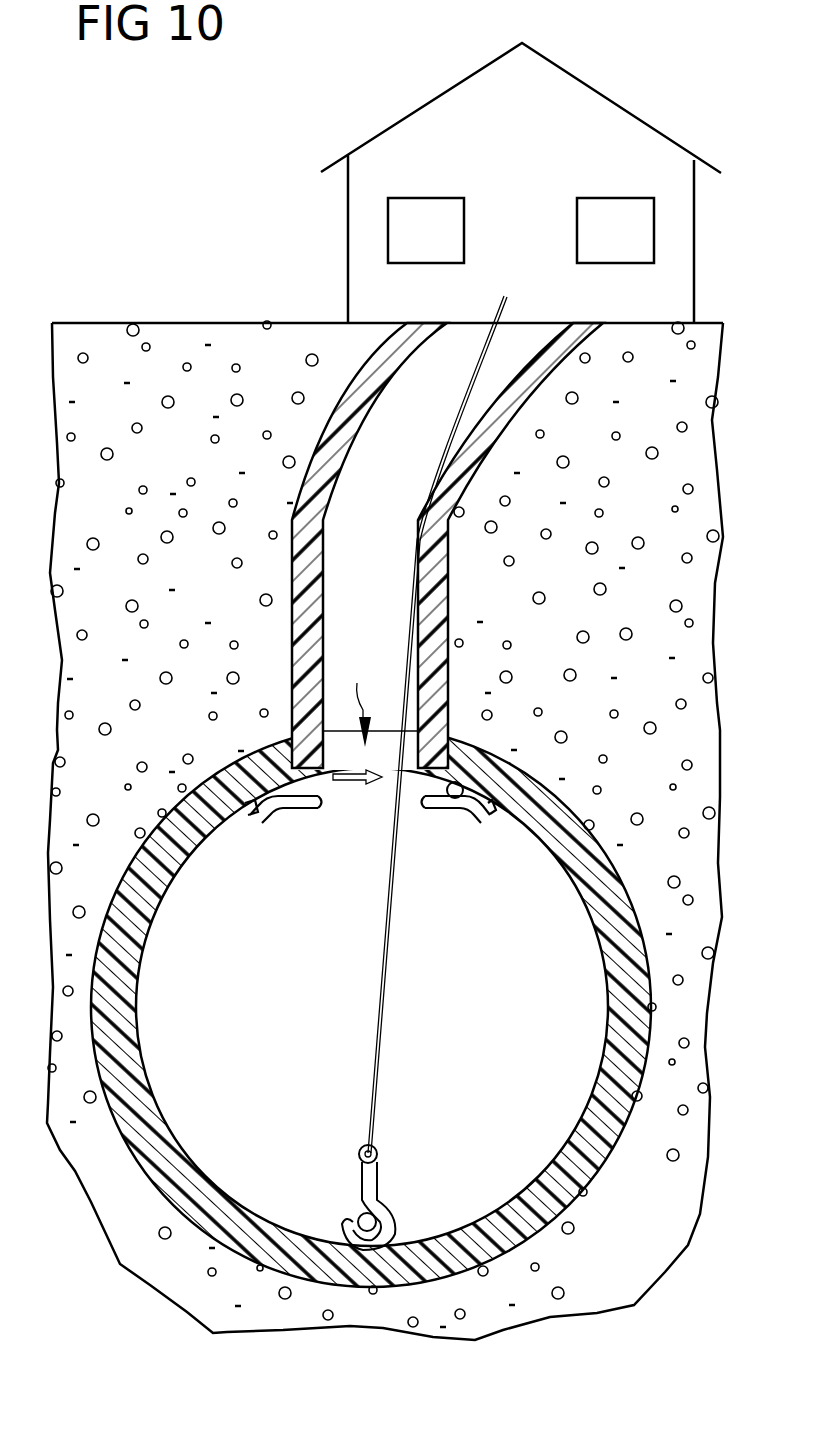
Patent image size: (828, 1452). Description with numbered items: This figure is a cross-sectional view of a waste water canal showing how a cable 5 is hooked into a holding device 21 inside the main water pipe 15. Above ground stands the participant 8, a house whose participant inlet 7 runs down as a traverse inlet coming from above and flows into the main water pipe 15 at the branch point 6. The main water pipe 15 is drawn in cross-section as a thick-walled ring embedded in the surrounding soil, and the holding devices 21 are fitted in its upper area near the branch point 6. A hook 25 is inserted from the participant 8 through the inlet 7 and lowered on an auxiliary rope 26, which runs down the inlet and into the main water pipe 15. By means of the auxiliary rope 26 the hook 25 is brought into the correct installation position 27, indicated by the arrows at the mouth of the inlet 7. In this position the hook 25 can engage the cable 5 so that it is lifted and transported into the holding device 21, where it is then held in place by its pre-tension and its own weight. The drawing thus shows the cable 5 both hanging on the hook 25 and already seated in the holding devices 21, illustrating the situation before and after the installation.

The cable 5 is at (450, 793).
The branch point 6 is at (330, 758).
The participant inlet 7 is at (374, 386).
The participant 8 is at (362, 208).
The main water pipe 15 is at (613, 1063).
The holding device 21 is at (278, 810).
The hook 25 is at (372, 1178).
The auxiliary rope 26 is at (457, 415).
The installation position 27 is at (360, 691).